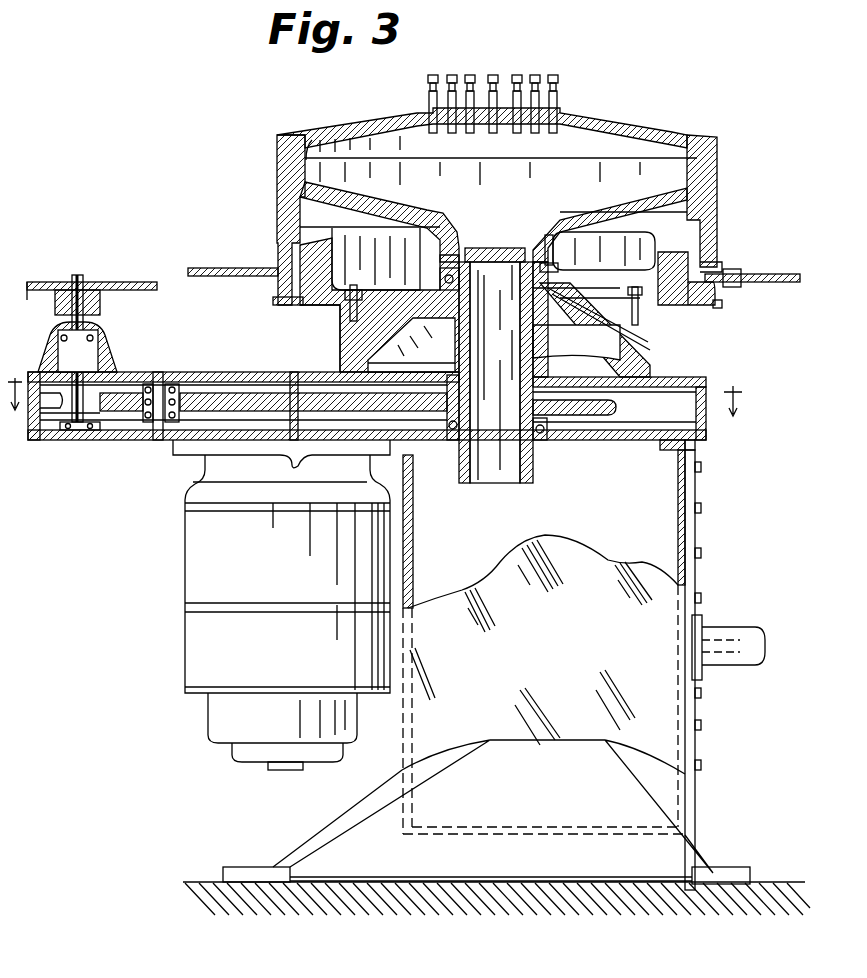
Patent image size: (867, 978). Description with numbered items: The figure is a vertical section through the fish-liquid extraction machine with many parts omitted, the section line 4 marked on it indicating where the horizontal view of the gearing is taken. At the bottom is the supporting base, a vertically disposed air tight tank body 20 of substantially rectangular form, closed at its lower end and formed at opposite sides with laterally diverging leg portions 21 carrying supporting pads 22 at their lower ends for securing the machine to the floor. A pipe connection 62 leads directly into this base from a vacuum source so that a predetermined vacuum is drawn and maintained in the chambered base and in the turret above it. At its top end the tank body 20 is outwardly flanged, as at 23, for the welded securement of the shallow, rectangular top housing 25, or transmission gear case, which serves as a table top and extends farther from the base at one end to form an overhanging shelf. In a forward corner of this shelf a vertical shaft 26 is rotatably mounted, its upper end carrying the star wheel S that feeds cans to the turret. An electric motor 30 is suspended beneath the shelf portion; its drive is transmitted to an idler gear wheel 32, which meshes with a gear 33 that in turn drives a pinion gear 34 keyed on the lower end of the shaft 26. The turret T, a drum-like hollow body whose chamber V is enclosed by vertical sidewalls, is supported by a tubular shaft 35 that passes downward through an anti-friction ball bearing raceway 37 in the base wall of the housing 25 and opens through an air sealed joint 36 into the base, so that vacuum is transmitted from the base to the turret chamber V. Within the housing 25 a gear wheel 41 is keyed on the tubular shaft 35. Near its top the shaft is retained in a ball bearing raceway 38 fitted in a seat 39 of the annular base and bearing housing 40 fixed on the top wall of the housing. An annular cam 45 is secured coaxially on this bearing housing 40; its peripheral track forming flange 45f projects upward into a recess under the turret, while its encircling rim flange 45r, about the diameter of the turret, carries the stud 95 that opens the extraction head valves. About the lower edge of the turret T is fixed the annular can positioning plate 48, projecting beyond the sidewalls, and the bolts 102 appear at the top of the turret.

The mounting bolts 102 is at (560, 102).
The turret T is at (660, 136).
The body chamber V is at (604, 166).
The can positioning plate 48 is at (200, 268).
The peripheral track forming flange 45f is at (300, 242).
The annular cam 45 is at (296, 272).
The stud 95 is at (322, 302).
The ball bearing raceway 38 is at (550, 304).
The seat 39 is at (434, 288).
The annular base and bearing housing 40 is at (344, 342).
The tubular shaft 35 is at (456, 342).
The rim flange 45r is at (714, 308).
The star wheel S is at (116, 280).
The vertical shaft 26 is at (82, 364).
The idler gear wheel 32 is at (244, 382).
The section line 4 is at (372, 409).
The gear 33 is at (116, 440).
The pinion gear 34 is at (44, 440).
The gear wheel 41 is at (600, 408).
The anti-friction ball bearing raceway 37 is at (544, 446).
The air sealed joint 36 is at (452, 446).
The flange 23 is at (696, 448).
The top housing 25 is at (650, 450).
The electric motor 30 is at (185, 562).
The tank body 20 is at (650, 728).
The leg portion 21 is at (348, 838).
The supporting pad 22 is at (250, 870).
The pipe connection 62 is at (740, 634).